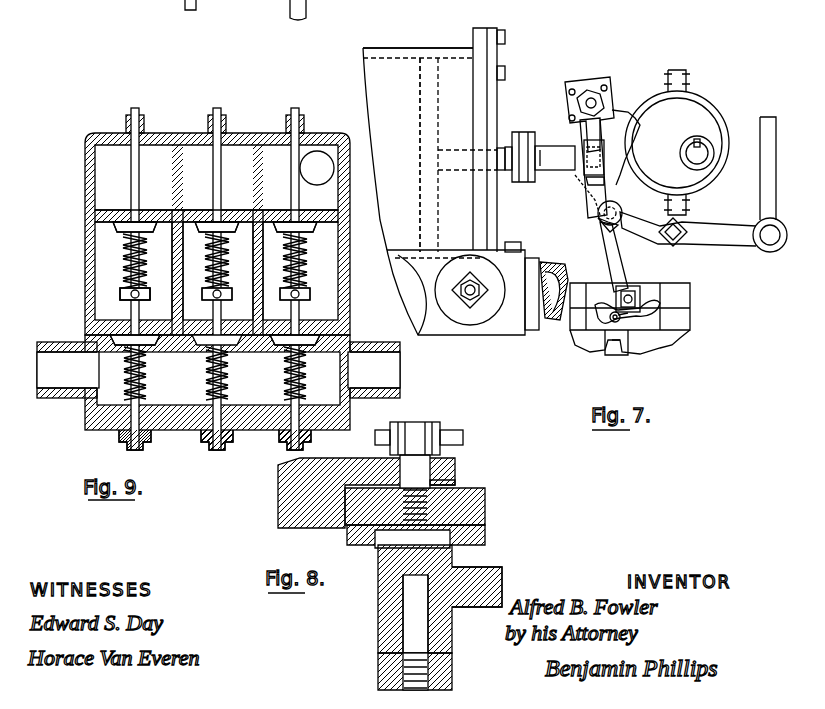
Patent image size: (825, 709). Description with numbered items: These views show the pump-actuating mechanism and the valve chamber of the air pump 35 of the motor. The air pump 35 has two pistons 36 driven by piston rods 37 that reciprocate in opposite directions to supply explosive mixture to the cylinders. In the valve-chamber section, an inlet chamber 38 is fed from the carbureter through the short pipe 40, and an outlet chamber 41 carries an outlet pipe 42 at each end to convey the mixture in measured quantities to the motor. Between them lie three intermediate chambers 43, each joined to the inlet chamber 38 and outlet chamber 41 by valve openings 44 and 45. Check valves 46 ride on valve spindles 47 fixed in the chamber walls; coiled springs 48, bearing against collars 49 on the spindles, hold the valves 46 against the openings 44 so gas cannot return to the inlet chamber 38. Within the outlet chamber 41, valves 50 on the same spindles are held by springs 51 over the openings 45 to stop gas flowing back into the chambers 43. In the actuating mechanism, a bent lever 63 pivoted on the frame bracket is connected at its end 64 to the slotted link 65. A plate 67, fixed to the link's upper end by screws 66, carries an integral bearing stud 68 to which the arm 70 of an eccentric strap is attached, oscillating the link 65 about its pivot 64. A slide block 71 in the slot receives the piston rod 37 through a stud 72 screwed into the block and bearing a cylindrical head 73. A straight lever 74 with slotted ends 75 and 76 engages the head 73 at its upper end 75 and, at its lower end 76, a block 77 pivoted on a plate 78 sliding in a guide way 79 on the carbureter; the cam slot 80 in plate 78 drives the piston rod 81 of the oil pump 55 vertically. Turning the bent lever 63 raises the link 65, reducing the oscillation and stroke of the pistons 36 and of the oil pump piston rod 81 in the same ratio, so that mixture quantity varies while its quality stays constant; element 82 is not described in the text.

In FIG. 7, the air pump 35 is at (399, 52).
In FIG. 7, the pistons 36 is at (426, 100).
In FIG. 7, the piston rods 37 is at (452, 152).
In FIG. 8, the piston rods 37 is at (290, 524).
In FIG. 9, the inlet chamber 38 is at (216, 177).
In FIG. 9, the short pipe 40 is at (317, 168).
In FIG. 9, the outlet chamber 41 is at (218, 378).
In FIG. 9, the outlet pipe 42 is at (218, 370).
In FIG. 9, the intermediate chambers 43 is at (216, 279).
In FIG. 9, the valve openings 44 is at (156, 210).
In FIG. 9, the valve openings 45 is at (158, 322).
In FIG. 9, the check valves 46 is at (125, 226).
In FIG. 9, the valve spindles 47 is at (131, 155).
In FIG. 9, the coiled springs 48 is at (205, 268).
In FIG. 9, the collars 49 is at (193, 301).
In FIG. 9, the valves 50 is at (160, 340).
In FIG. 9, the springs 51 is at (150, 370).
In FIG. 7, the oil pump 55 is at (622, 350).
In FIG. 7, the bent lever 63 is at (740, 238).
In FIG. 7, the pivotal connection 64 is at (598, 216).
In FIG. 7, the slotted link 65 is at (575, 130).
In FIG. 8, the slotted link 65 is at (485, 505).
In FIG. 8, the screws 66 is at (486, 515).
In FIG. 8, the plate 67 is at (486, 538).
In FIG. 8, the bearing stud 68 is at (385, 580).
In FIG. 8, the arm 70 is at (500, 585).
In FIG. 7, the slide block 71 is at (554, 291).
In FIG. 8, the slide block 71 is at (450, 490).
In FIG. 8, the stud 72 is at (445, 458).
In FIG. 8, the cylindrical head 73 is at (418, 430).
In FIG. 7, the straight lever 74 is at (612, 255).
In FIG. 7, the slotted upper end 75 is at (580, 180).
In FIG. 8, the slotted upper end 75 is at (388, 432).
In FIG. 7, the slotted lower end 76 is at (638, 288).
In FIG. 7, the block 77 is at (640, 302).
In FIG. 7, the plate 78 is at (660, 318).
In FIG. 7, the guide way 79 is at (696, 320).
In FIG. 7, the cam slot 80 is at (640, 313).
In FIG. 7, the piston rod 81 is at (613, 324).
In FIG. 7, the lever arm 82 is at (770, 170).